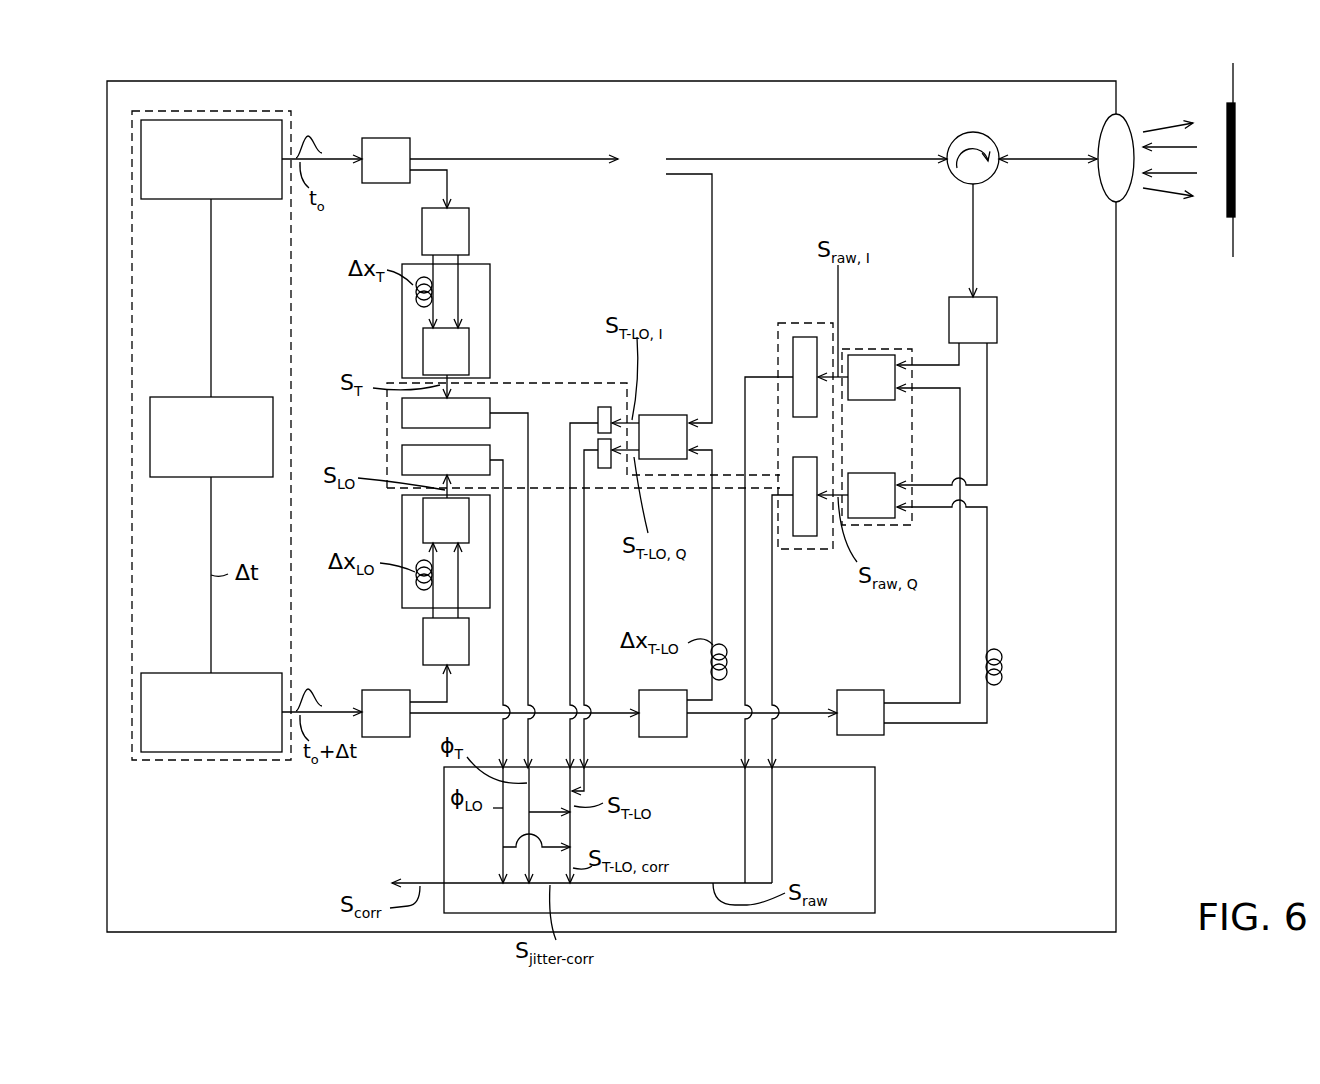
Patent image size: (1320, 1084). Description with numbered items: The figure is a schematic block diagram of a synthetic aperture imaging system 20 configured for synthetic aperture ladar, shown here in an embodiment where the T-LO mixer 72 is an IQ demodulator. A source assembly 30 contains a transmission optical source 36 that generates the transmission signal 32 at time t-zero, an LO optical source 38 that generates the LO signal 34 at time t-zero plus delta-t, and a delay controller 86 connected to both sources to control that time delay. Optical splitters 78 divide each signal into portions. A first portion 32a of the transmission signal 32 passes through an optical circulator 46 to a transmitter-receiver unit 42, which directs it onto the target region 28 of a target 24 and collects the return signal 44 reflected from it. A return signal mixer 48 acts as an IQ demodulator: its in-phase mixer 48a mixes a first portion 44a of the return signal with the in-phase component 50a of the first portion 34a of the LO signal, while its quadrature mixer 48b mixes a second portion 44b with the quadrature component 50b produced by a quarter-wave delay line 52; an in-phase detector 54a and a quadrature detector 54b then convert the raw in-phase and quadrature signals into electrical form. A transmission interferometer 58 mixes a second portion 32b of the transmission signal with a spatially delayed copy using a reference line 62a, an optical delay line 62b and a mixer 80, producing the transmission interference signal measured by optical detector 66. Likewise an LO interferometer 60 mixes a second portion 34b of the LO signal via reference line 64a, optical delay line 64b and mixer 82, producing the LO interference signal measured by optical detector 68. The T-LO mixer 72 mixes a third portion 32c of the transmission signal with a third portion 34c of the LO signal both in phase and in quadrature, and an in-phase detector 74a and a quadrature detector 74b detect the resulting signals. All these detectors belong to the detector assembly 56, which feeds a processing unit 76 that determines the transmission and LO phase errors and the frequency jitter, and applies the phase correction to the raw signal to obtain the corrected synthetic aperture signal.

The SA imaging system 20 is at (1145, 473).
The target 24 is at (1220, 238).
The target region 28 is at (1215, 204).
The source assembly 30 is at (252, 111).
The transmission signal 32 is at (341, 156).
The first portion of the transmission signal 32a is at (833, 156).
The second portion of the transmission signal 32b is at (449, 185).
The third portion of the transmission signal 32c is at (712, 205).
The LO signal 34 is at (342, 711).
The first portion of the LO signal 34a is at (807, 708).
The second portion of the LO signal 34b is at (449, 692).
The third portion of the LO signal 34c is at (712, 608).
The transmission optical source 36 is at (198, 173).
The LO optical source 38 is at (198, 726).
The transmitter-receiver unit 42 is at (1124, 200).
The return signal 44 is at (975, 233).
The first portion of the return signal 44a is at (958, 355).
The second portion of the return signal 44b is at (989, 363).
The optical circulator 46 is at (991, 137).
The return signal mixer 48 is at (877, 348).
The in-phase mixer 48a is at (890, 390).
The quadrature mixer 48b is at (890, 508).
The in-phase component 50a is at (960, 650).
The quadrature component 50b is at (975, 725).
The quarter-wave delay line 52 is at (1013, 668).
The in-phase detector 54a is at (800, 337).
The quadrature detector 54b is at (805, 537).
The detector assembly 56 is at (514, 383).
The transmission interferometer 58 is at (491, 272).
The LO interferometer 60 is at (402, 532).
The reference line 62a is at (472, 300).
The optical delay line 62b is at (412, 307).
The reference line 64a is at (472, 577).
The optical delay line 64b is at (410, 585).
The optical detector 66 is at (433, 426).
The optical detector 68 is at (433, 473).
The T-LO mixer 72 is at (650, 450).
The in-phase detector 74a is at (603, 407).
The quadrature detector 74b is at (603, 468).
The processing unit 76 is at (832, 807).
The optical splitter 78 is at (373, 173).
The mixer 80 is at (433, 365).
The mixer 82 is at (433, 534).
The delay controller 86 is at (198, 450).